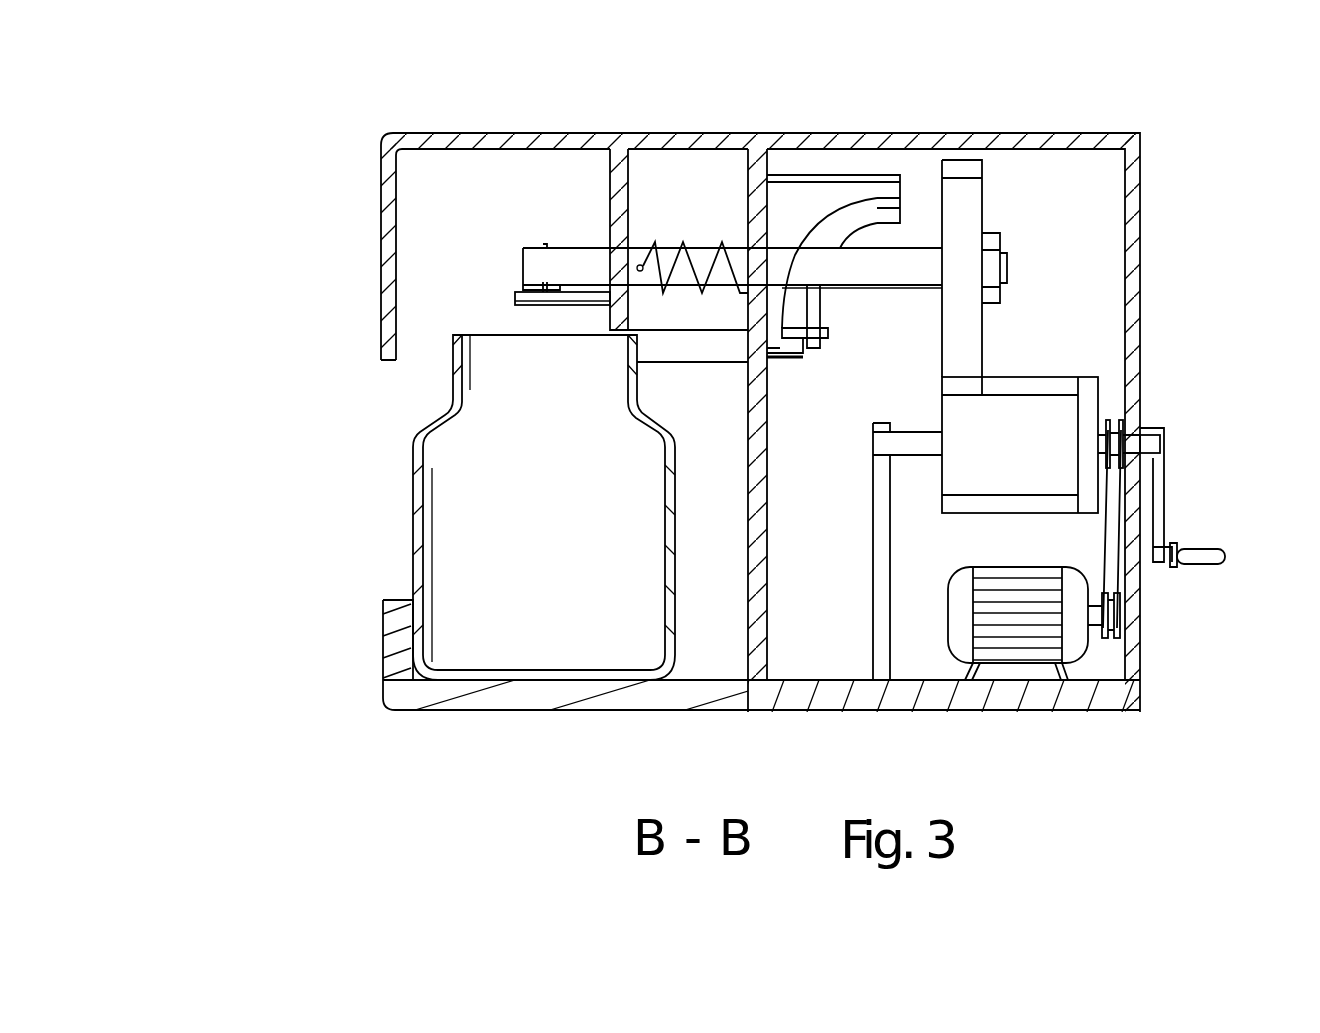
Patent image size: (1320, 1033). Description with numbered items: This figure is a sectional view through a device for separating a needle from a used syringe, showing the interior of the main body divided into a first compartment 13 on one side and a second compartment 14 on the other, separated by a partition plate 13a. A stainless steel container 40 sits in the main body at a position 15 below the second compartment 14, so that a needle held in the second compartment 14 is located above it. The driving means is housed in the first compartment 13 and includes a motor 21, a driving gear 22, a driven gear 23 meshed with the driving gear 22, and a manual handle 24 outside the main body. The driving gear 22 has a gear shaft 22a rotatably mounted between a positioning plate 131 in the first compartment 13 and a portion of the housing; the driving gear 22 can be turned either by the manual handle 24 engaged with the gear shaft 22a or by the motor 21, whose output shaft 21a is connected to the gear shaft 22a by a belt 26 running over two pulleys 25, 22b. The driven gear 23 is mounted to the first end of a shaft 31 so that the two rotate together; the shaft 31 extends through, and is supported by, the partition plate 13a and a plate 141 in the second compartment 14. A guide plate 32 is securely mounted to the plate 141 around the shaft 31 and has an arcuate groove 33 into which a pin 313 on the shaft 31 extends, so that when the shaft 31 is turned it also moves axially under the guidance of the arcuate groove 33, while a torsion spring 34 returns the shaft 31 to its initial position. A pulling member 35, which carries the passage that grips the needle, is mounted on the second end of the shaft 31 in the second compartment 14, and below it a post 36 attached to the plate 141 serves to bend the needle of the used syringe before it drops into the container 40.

The first compartment 13 is at (1087, 243).
The partition plate 13a is at (757, 463).
The positioning plate 131 is at (882, 600).
The second compartment 14 is at (440, 218).
The plate 141 is at (617, 192).
The position 15 is at (408, 688).
The motor 21 is at (1073, 642).
The output shaft 21a is at (1095, 620).
The driving gear 22 is at (1030, 430).
The gear shaft 22a is at (908, 447).
The pulley 22b is at (1120, 425).
The driven gear 23 is at (963, 337).
The manual handle 24 is at (1203, 550).
The pulley 25 is at (1125, 625).
The belt 26 is at (1108, 575).
The shaft 31 is at (913, 260).
The pin 313 is at (815, 332).
The guide plate 32 is at (805, 210).
The arcuate groove 33 is at (855, 227).
The torsion spring 34 is at (668, 258).
The pulling member 35 is at (523, 250).
The post 36 is at (510, 295).
The container 40 is at (443, 542).